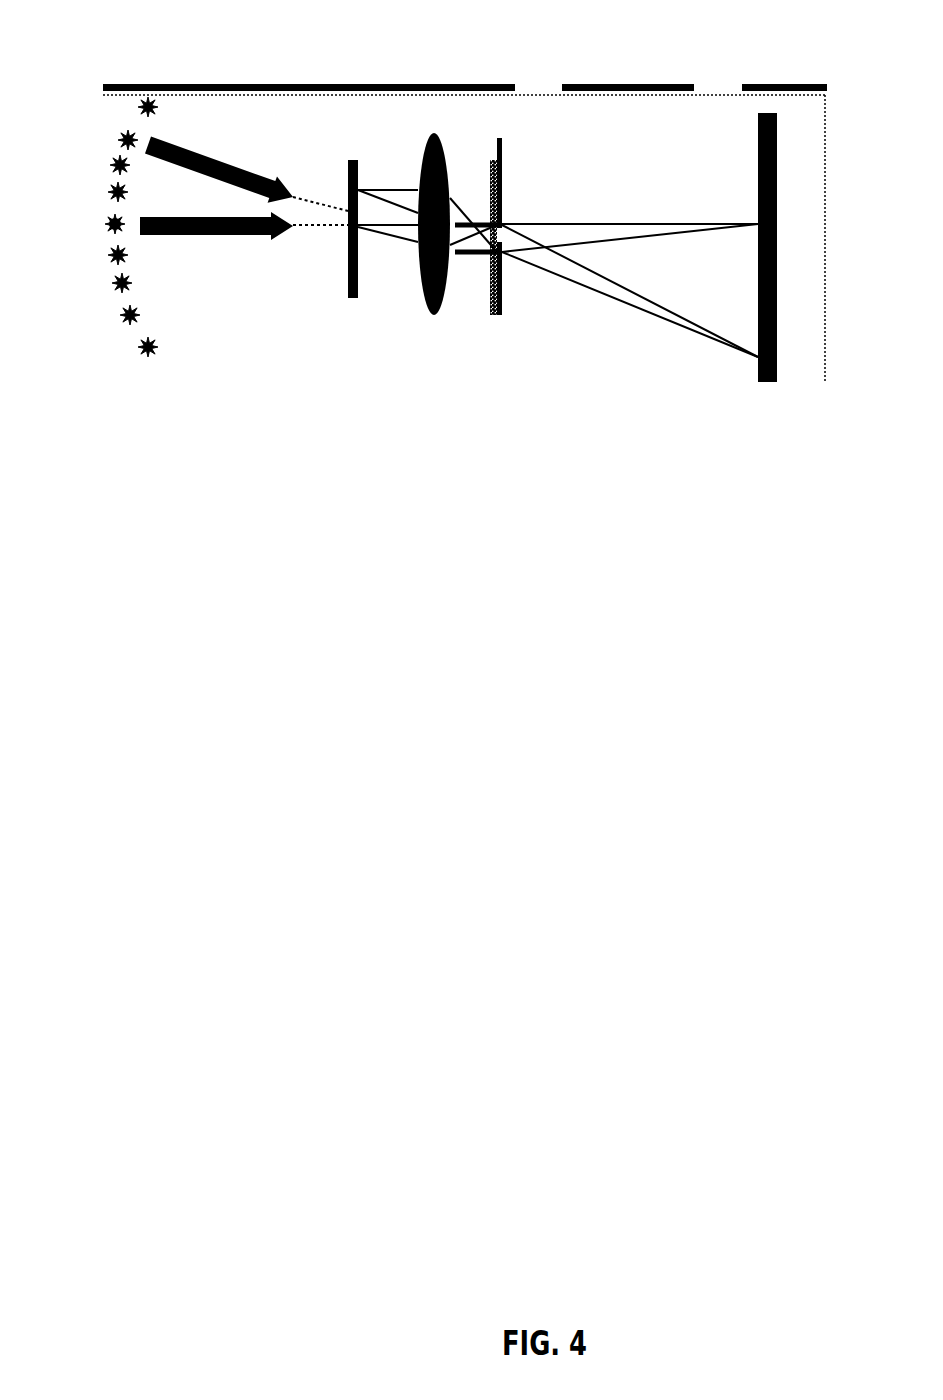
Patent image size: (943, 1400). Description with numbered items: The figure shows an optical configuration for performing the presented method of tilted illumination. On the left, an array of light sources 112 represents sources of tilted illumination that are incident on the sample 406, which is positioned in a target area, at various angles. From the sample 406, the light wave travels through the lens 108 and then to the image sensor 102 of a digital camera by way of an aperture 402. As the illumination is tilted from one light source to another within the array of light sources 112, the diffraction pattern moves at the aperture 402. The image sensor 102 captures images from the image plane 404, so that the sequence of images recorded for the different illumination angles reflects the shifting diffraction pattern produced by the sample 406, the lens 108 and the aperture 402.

The image sensor 102 is at (586, 54).
The array of light sources 112 is at (123, 177).
The sample 406 is at (352, 163).
The lens 108 is at (434, 142).
The aperture 402 is at (502, 213).
The image plane 404 is at (762, 143).